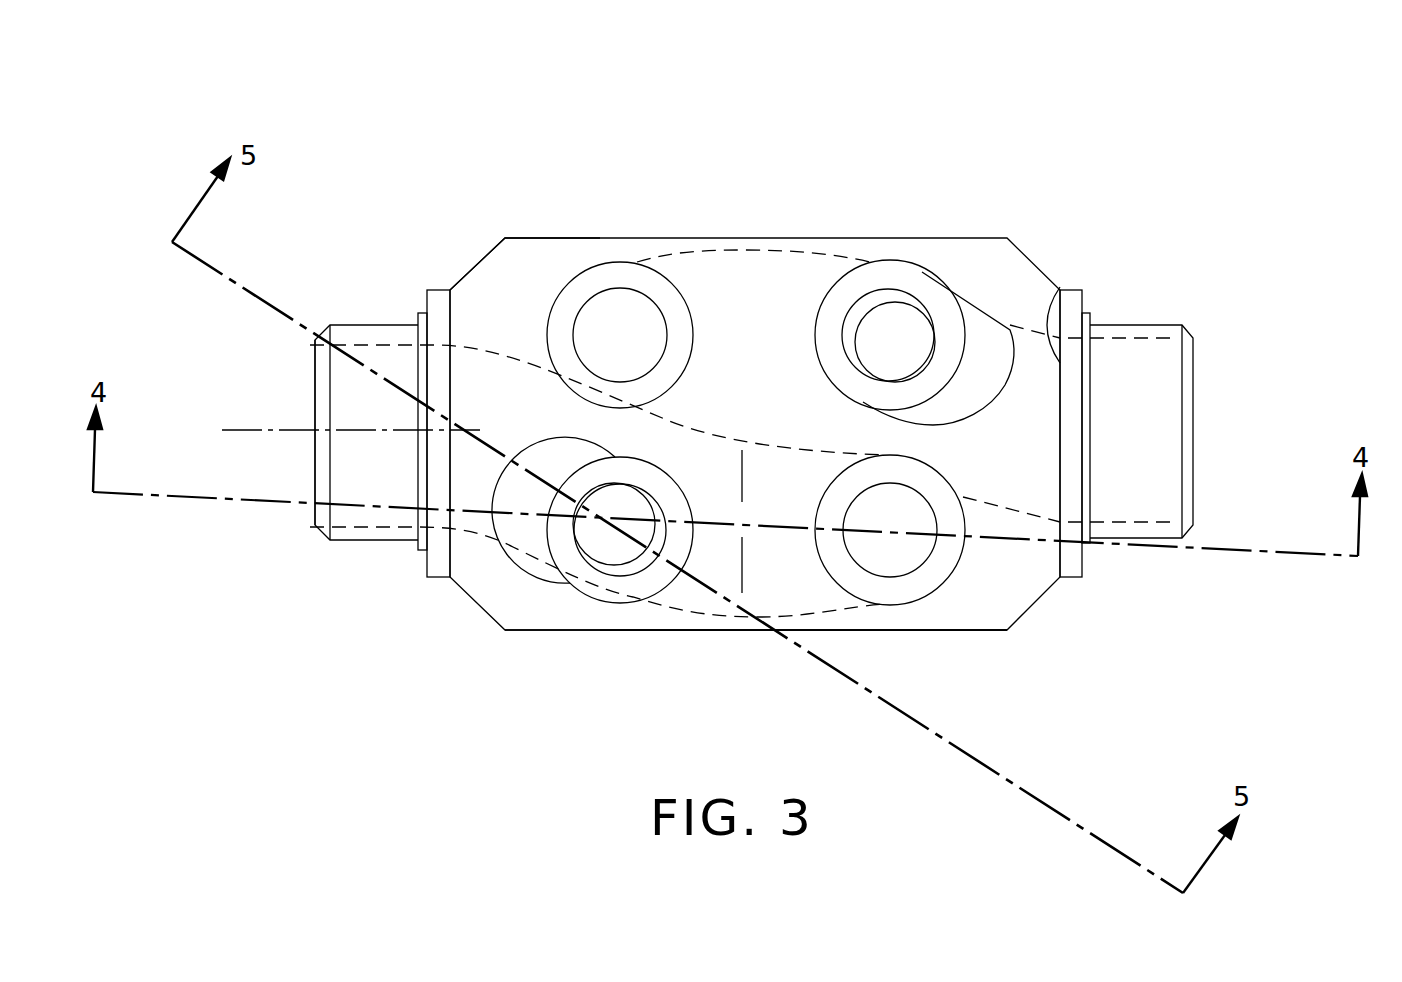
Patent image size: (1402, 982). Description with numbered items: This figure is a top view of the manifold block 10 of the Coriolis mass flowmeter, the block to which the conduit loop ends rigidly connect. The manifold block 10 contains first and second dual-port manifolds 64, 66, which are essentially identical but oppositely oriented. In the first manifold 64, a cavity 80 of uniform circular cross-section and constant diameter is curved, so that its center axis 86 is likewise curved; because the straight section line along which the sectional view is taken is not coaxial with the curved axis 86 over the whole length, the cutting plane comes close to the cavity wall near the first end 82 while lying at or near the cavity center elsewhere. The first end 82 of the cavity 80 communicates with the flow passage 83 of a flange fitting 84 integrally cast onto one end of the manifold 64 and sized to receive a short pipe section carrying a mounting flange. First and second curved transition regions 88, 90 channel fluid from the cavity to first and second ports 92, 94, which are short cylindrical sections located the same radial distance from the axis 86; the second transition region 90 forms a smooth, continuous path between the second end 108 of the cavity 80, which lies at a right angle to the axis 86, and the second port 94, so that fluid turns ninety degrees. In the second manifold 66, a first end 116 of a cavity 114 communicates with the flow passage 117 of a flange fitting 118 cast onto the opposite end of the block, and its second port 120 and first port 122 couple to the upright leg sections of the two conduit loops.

The manifold block 10 is at (1097, 86).
The first dual-port manifold 64 is at (683, 622).
The second dual-port manifold 66 is at (1027, 314).
The cavity 80 is at (728, 560).
The first end of cavity 82 is at (453, 376).
The flow passage 83 is at (337, 482).
The flange fitting 84 is at (362, 540).
The center axis of cavity 86 is at (244, 428).
The first curved transition region 88 is at (530, 543).
The second curved transition region 90 is at (815, 587).
The first port 92 is at (603, 592).
The second port 94 is at (942, 578).
The second end of cavity 108 is at (748, 465).
The cavity of second manifold 114 is at (803, 270).
The first end of cavity 114 116 is at (1060, 290).
The flow passage 117 is at (1158, 443).
The flange fitting 118 is at (1163, 325).
The second port of manifold 66 120 is at (614, 272).
The first port of manifold 66 122 is at (926, 285).